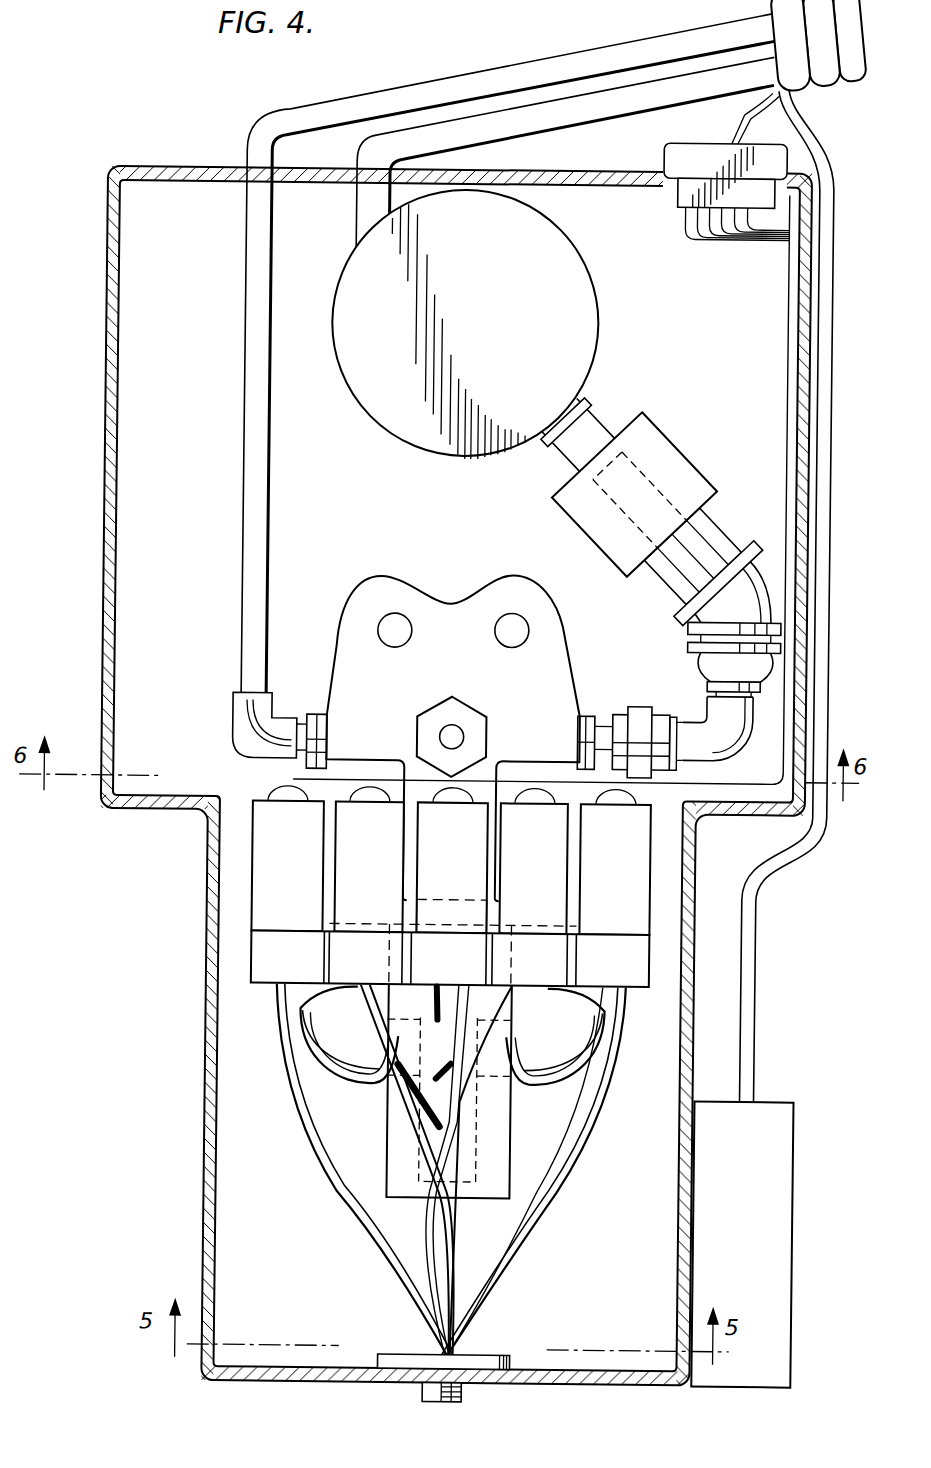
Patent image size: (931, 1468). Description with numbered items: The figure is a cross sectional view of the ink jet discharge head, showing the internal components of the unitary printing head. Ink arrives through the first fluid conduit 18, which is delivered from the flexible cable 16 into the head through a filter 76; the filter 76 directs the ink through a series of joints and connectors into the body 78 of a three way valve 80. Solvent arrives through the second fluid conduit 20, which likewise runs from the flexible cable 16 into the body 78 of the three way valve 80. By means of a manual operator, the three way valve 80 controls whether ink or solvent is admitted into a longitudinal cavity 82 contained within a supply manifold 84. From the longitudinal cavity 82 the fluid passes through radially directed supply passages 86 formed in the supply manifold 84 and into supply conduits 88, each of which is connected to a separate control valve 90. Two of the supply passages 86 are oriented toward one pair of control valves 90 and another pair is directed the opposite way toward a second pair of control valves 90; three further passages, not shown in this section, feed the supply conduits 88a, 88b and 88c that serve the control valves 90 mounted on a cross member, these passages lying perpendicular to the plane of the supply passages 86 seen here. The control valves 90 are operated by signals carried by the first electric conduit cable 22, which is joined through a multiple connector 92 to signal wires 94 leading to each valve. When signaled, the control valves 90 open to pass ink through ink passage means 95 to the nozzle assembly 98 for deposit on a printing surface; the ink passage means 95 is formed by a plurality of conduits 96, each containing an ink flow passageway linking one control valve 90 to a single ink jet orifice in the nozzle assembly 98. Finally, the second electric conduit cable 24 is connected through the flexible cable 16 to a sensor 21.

The flexible cable 16 is at (857, 78).
The first fluid conduit 18 is at (633, 108).
The second fluid conduit 20 is at (574, 50).
The sensor 21 is at (806, 1275).
The first electric conduit cable 22 is at (737, 117).
The second electric conduit cable 24 is at (836, 229).
The filter 76 is at (602, 318).
The body 78 is at (530, 583).
The three way valve 80 is at (486, 716).
The longitudinal cavity 82 is at (449, 1013).
The supply manifold 84 is at (510, 1185).
The radially directed supply passages 86 is at (388, 1052).
The supply conduits 88 is at (348, 1052).
The supply conduit 88a is at (384, 990).
The supply conduit 88b is at (470, 990).
The supply conduit 88c is at (527, 1005).
The control valves 90 is at (635, 875).
The multiple connector 92 is at (680, 198).
The signal wires 94 is at (788, 350).
The ink passage means 95 is at (334, 1244).
The conduits 96 is at (426, 1240).
The nozzle assembly 98 is at (516, 1353).